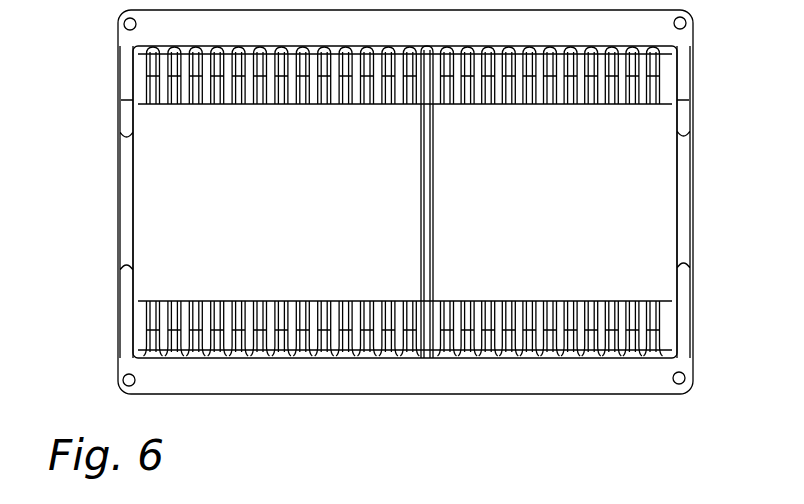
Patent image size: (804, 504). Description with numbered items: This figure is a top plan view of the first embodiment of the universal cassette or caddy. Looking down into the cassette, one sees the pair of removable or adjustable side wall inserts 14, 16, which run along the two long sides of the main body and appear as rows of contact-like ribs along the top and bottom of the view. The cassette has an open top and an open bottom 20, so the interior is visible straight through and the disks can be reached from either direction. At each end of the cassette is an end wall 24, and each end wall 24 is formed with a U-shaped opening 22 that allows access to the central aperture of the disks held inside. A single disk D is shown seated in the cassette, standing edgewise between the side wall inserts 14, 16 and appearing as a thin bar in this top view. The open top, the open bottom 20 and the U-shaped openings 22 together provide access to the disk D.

The side wall insert 14 is at (318, 300).
The side wall insert 16 is at (257, 88).
The open bottom 20 is at (617, 208).
The U-shaped opening 22 is at (100, 230).
The end wall 24 is at (128, 103).
The disk D is at (433, 170).